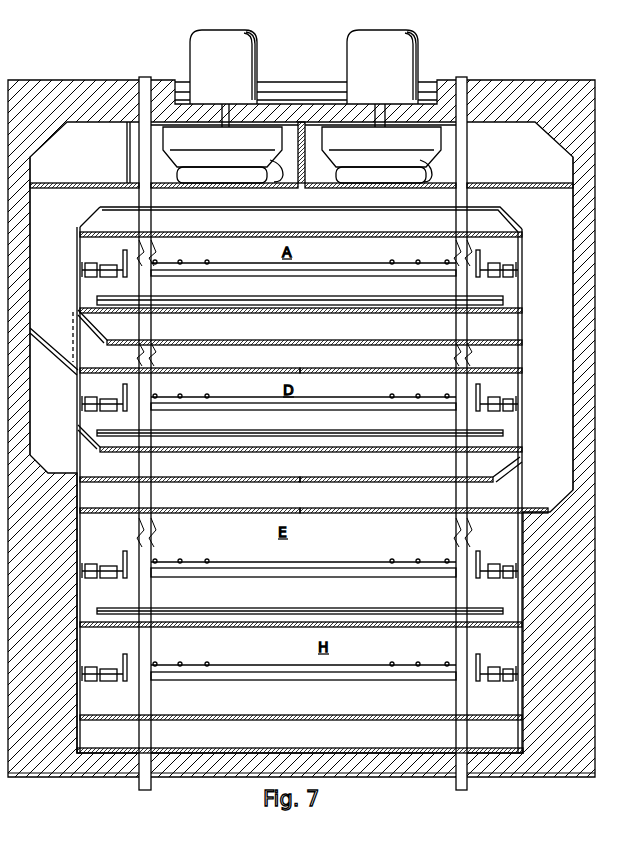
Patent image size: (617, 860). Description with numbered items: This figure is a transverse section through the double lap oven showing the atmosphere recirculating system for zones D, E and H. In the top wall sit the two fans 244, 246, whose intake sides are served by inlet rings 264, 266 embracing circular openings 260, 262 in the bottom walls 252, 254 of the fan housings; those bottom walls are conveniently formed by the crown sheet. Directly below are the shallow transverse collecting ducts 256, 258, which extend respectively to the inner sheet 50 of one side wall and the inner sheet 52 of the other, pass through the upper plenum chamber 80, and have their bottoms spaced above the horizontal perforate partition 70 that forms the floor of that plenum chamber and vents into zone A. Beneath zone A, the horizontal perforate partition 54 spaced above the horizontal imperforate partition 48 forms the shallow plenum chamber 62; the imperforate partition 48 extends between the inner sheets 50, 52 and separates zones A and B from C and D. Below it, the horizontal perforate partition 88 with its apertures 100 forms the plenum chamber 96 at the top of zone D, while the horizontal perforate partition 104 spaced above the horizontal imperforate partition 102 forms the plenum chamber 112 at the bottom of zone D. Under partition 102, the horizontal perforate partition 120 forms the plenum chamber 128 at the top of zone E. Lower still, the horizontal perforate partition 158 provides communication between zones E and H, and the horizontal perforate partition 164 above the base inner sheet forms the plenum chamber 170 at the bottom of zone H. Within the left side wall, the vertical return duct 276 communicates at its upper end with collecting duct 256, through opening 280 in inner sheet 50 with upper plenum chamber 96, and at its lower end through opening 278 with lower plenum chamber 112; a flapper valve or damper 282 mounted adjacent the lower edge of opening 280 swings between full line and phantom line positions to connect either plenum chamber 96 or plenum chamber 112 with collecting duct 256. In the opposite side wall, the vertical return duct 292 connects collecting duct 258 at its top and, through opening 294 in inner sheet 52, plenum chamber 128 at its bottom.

The fan 244 is at (252, 135).
The fan 246 is at (405, 137).
The inlet ring 264 is at (283, 171).
The inlet ring 266 is at (437, 171).
The bottom wall 252 is at (118, 186).
The bottom wall 254 is at (493, 188).
The collecting duct 256 is at (221, 201).
The collecting duct 258 is at (424, 201).
The circular opening 260 is at (240, 183).
The circular opening 262 is at (370, 186).
The plenum chamber 80 is at (315, 230).
The horizontal perforate partition 70 is at (357, 238).
The vertical return duct 276 is at (70, 258).
The vertical return duct 292 is at (560, 328).
The horizontal perforate partition 54 is at (310, 310).
The plenum chamber 62 is at (332, 339).
The horizontal imperforate partition 48 is at (243, 343).
The opening 280 is at (82, 353).
The flapper valve or damper 282 is at (57, 320).
The horizontal perforate partition 88 is at (220, 370).
The plenum chamber 96 is at (332, 366).
The apertures 100 is at (364, 376).
The horizontal perforate partition 104 is at (300, 450).
The opening 278 is at (82, 458).
The plenum chamber 112 is at (228, 472).
The horizontal imperforate partition 102 is at (372, 479).
The plenum chamber 128 is at (305, 504).
The horizontal perforate partition 120 is at (347, 512).
The inner sheet 50 is at (80, 496).
The inner sheet 52 is at (520, 540).
The opening 294 is at (518, 490).
The horizontal perforate partition 158 is at (290, 630).
The horizontal perforate partition 164 is at (172, 713).
The plenum chamber 170 is at (300, 744).